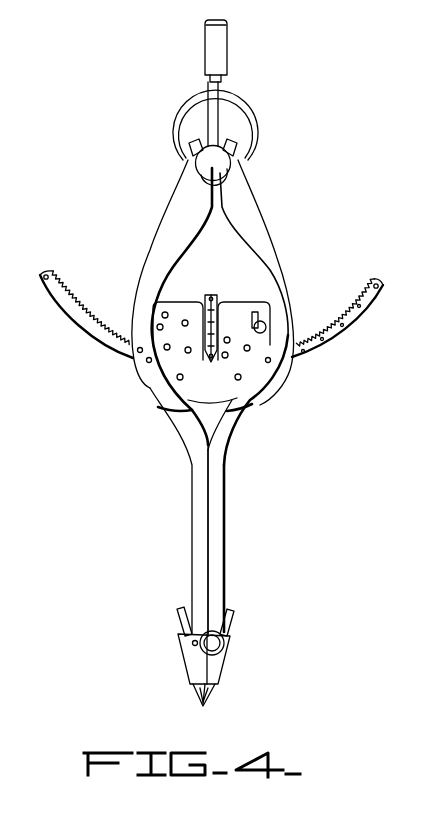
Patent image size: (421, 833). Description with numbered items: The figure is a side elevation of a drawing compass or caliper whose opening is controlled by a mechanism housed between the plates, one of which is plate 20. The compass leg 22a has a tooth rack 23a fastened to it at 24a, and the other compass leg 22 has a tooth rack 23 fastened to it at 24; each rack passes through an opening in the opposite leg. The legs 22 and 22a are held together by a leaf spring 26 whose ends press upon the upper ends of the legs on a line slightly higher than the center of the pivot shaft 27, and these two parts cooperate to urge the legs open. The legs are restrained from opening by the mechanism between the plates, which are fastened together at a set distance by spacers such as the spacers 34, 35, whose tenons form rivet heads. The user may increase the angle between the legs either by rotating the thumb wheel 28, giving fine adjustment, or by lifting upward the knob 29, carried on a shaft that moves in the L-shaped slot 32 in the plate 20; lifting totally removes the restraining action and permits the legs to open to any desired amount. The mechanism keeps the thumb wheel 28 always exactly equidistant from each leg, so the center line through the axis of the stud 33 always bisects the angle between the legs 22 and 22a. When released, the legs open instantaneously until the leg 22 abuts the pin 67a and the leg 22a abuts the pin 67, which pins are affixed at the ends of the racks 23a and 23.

The plate 20 is at (236, 305).
The compass leg 22 is at (225, 452).
The compass leg 22a is at (200, 450).
The tooth rack 23 is at (82, 299).
The tooth rack 23a is at (348, 303).
The fastening point of tooth rack 24 is at (270, 362).
The fastening point of tooth rack 24a is at (148, 361).
The leaf spring 26 is at (260, 127).
The pivot shaft 27 is at (222, 168).
The thumb wheel 28 is at (209, 298).
The knob 29 is at (266, 325).
The L-shaped slot 32 is at (257, 313).
The stud 33 is at (210, 118).
The spacer 34 is at (178, 379).
The spacer 35 is at (240, 378).
The pin 67 is at (43, 275).
The pin 67a is at (379, 283).